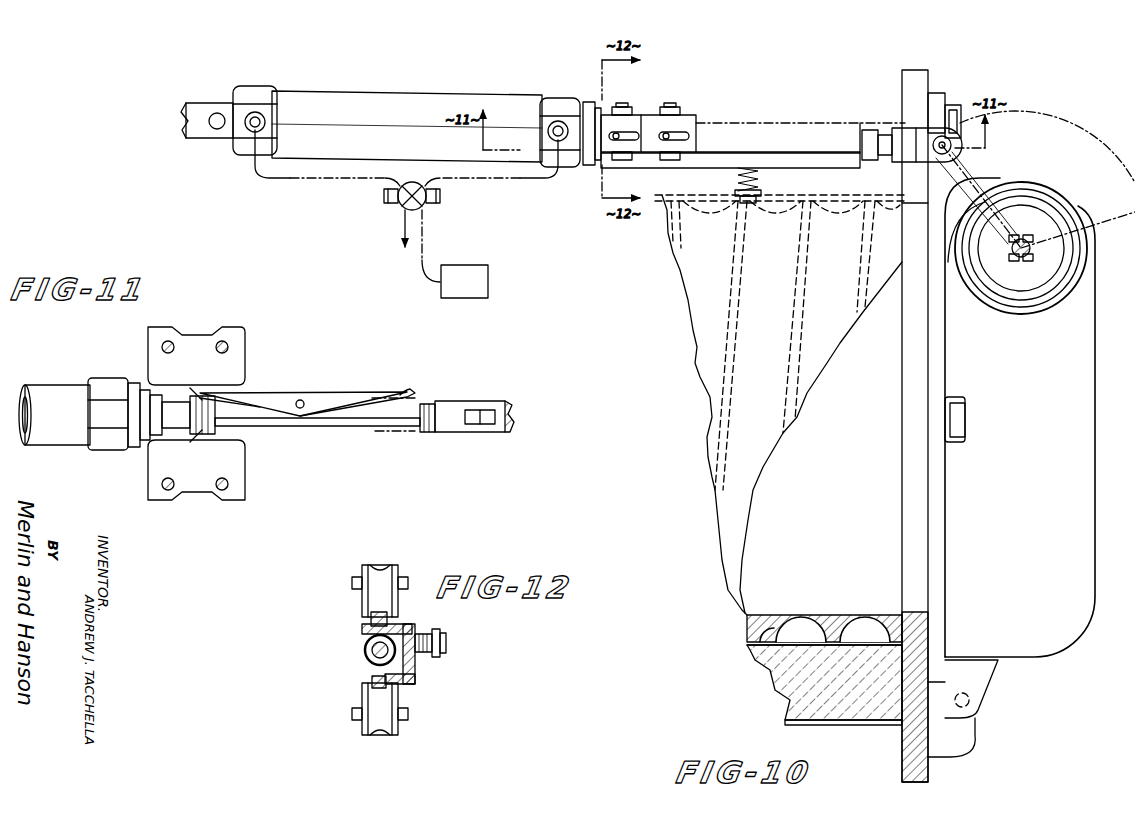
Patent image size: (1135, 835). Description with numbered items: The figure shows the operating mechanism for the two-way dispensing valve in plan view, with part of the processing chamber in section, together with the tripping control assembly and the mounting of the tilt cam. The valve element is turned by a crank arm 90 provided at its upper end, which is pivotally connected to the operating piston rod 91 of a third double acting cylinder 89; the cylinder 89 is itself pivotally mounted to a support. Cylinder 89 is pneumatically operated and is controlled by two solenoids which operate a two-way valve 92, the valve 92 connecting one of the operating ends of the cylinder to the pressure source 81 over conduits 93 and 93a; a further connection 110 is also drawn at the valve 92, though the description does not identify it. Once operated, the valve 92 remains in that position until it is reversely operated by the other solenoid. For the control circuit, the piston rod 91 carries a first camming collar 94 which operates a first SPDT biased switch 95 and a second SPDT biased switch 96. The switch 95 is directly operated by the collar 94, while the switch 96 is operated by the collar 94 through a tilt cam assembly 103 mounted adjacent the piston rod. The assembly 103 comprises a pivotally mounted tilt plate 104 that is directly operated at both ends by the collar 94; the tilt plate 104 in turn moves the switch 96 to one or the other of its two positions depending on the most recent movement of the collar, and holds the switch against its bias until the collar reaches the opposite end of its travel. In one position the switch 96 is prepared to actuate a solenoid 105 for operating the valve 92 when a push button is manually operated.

In FIG. 10, the third double acting cylinder 89 is at (350, 96).
In FIG. 10, the operating piston rod 91 is at (870, 140).
In FIG. 11, the operating piston rod 91 is at (360, 427).
In FIG. 10, the crank arm 90 is at (966, 178).
In FIG. 10, the conduit 93 is at (295, 180).
In FIG. 10, the conduit 93a is at (512, 180).
In FIG. 10, the two-way valve 92 is at (406, 208).
In FIG. 10, the solenoid 105 is at (386, 201).
In FIG. 10, the valve port 110 is at (440, 201).
In FIG. 10, the pressure source 81 is at (478, 272).
In FIG. 11, the second SPDT biased switch 96 is at (150, 337).
In FIG. 11, the first SPDT biased switch 95 is at (245, 482).
In FIG. 11, the first camming collar 94 is at (222, 432).
In FIG. 11, the tilt plate 104 is at (280, 392).
In FIG. 11, the tilt cam assembly 103 is at (322, 388).